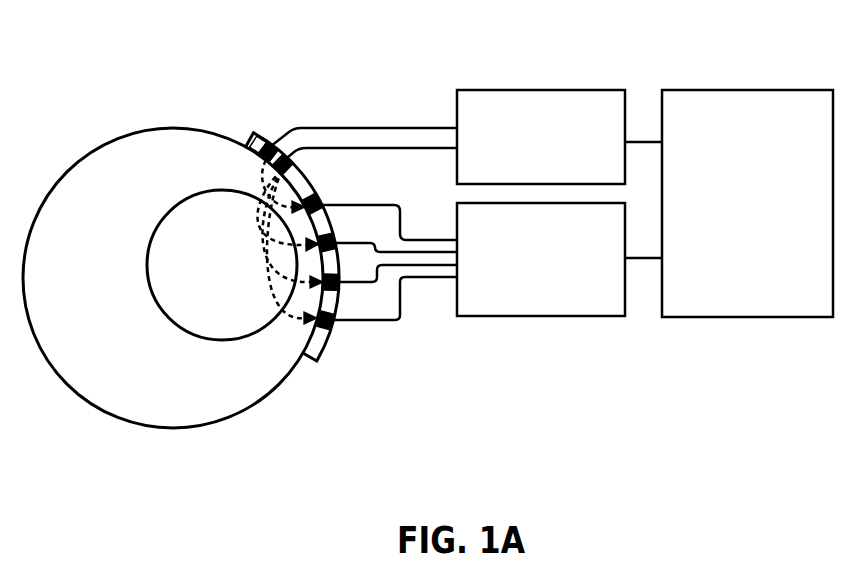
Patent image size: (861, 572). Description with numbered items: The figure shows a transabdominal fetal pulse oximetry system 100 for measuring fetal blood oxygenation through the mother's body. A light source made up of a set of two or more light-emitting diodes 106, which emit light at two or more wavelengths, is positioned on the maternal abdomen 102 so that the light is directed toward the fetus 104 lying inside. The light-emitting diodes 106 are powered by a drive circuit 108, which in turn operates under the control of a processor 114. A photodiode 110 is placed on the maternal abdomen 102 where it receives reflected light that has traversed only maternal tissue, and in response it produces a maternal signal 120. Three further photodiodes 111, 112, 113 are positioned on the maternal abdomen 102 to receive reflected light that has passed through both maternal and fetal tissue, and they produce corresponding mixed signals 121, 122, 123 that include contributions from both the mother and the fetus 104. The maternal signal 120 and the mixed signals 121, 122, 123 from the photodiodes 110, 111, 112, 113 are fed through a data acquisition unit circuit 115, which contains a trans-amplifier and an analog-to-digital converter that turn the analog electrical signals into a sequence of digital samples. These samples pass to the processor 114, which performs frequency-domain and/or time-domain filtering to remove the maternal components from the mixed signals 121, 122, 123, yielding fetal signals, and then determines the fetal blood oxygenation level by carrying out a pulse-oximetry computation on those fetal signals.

The transabdominal fetal pulse oximetry system 100 is at (678, 507).
The maternal abdomen 102 is at (130, 136).
The fetus 104 is at (222, 265).
The light-emitting diodes 106 is at (280, 152).
The drive circuit 108 is at (541, 137).
The photodiode 110 is at (320, 200).
The photodiode 111 is at (337, 250).
The photodiode 112 is at (339, 288).
The photodiode 113 is at (333, 326).
The processor 114 is at (747, 203).
The data acquisition unit circuit 115 is at (541, 259).
The maternal signal 120 is at (298, 203).
The mixed signal 121 is at (250, 240).
The mixed signal 122 is at (258, 252).
The mixed signal 123 is at (277, 293).